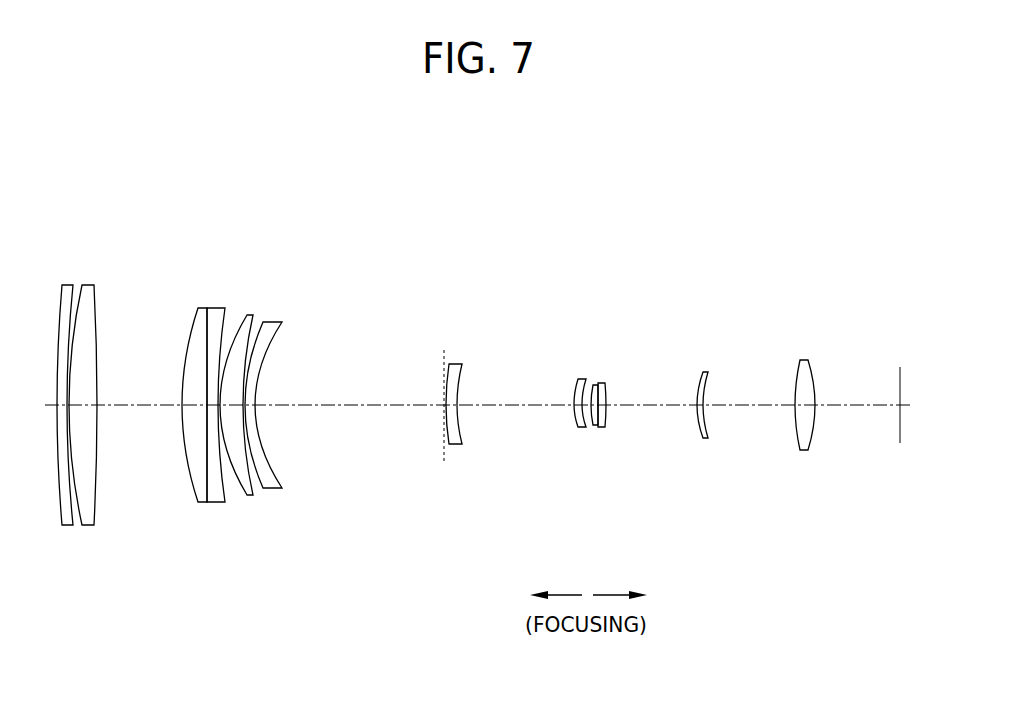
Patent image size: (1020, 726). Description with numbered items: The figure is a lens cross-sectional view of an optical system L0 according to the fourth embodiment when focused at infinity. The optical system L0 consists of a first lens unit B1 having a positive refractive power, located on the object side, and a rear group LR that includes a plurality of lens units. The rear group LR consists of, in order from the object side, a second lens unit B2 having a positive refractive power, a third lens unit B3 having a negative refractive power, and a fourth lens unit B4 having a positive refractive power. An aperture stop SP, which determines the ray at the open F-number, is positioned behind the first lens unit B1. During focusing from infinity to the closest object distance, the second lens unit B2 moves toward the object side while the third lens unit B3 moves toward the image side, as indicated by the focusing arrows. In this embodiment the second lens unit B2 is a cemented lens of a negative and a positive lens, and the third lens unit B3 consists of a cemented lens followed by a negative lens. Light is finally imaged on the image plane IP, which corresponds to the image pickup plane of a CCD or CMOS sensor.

The optical system L0 is at (53, 241).
The first lens unit B1 is at (487, 518).
The second lens unit B2 is at (587, 427).
The third lens unit B3 is at (612, 427).
The fourth lens unit B4 is at (761, 431).
The rear group LR is at (692, 468).
The aperture stop SP is at (444, 358).
The image plane IP is at (900, 387).